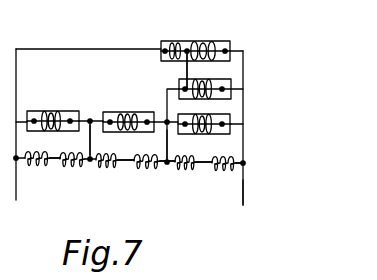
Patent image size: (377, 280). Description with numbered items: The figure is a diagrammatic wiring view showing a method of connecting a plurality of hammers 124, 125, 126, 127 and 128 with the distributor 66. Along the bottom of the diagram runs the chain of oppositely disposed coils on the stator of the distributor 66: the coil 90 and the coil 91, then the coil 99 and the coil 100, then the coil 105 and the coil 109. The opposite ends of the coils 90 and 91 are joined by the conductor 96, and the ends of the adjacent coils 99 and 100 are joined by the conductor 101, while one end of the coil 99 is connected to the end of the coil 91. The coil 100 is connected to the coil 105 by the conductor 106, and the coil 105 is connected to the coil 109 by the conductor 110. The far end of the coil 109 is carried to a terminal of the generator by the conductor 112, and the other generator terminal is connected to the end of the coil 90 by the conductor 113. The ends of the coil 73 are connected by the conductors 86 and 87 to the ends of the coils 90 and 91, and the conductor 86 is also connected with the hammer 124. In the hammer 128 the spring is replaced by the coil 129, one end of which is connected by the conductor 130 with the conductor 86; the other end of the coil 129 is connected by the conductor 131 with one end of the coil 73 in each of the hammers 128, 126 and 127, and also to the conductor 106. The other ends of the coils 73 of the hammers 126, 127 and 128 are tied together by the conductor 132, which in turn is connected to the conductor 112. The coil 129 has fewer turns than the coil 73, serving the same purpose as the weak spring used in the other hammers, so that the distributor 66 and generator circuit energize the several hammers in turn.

The distributor 66 is at (220, 168).
The coil 73 is at (207, 44).
The conductor 86 is at (16, 141).
The conductor 87 is at (90, 143).
The coil 90 is at (27, 166).
The coil 91 is at (64, 167).
The conductor 96 is at (53, 156).
The coil 99 is at (101, 170).
The coil 100 is at (153, 170).
The conductor 101 is at (127, 170).
The coil 105 is at (194, 145).
The conductor 106 is at (168, 165).
The coil 109 is at (220, 157).
The conductor 110 is at (204, 164).
The conductor 112 is at (243, 191).
The conductor 113 is at (17, 190).
The hammer 124 is at (36, 112).
The hammer 125 is at (109, 114).
The hammer 126 is at (189, 116).
The hammer 127 is at (199, 80).
The hammer 128 is at (231, 43).
The coil 129 is at (176, 46).
The conductor 130 is at (41, 49).
The conductor 131 is at (167, 140).
The conductor 132 is at (258, 145).